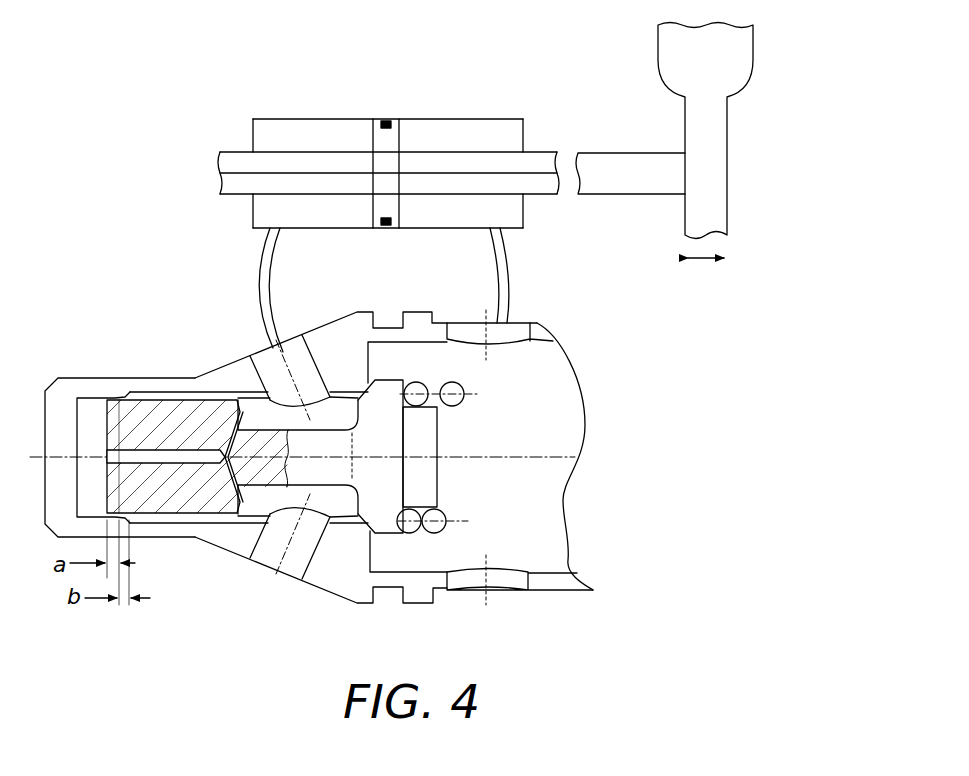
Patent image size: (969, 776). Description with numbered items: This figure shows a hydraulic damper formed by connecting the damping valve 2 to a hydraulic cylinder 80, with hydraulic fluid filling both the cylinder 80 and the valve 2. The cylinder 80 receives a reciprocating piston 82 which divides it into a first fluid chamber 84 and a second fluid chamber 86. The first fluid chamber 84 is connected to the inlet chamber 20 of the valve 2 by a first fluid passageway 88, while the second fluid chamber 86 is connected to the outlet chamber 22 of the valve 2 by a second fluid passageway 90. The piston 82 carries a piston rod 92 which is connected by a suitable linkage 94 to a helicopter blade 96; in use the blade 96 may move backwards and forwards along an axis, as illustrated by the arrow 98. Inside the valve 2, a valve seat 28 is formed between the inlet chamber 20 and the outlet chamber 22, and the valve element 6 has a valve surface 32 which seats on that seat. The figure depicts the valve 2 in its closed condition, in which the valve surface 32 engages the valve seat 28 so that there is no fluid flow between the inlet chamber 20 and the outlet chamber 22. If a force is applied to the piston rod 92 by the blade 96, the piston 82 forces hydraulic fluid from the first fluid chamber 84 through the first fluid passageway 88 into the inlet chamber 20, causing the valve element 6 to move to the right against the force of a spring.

The damping valve 2 is at (76, 356).
The valve element 6 is at (158, 410).
The inlet chamber 20 is at (250, 502).
The outlet chamber 22 is at (545, 558).
The valve seat 28 is at (363, 520).
The valve surface 32 is at (353, 500).
The hydraulic cylinder 80 is at (328, 118).
The reciprocating piston 82 is at (387, 130).
The first fluid chamber 84 is at (271, 130).
The second fluid chamber 86 is at (478, 130).
The first fluid passageway 88 is at (258, 273).
The second fluid passageway 90 is at (507, 273).
The piston rod 92 is at (545, 152).
The linkage 94 is at (640, 183).
The helicopter blade 96 is at (716, 158).
The arrow 98 is at (707, 263).